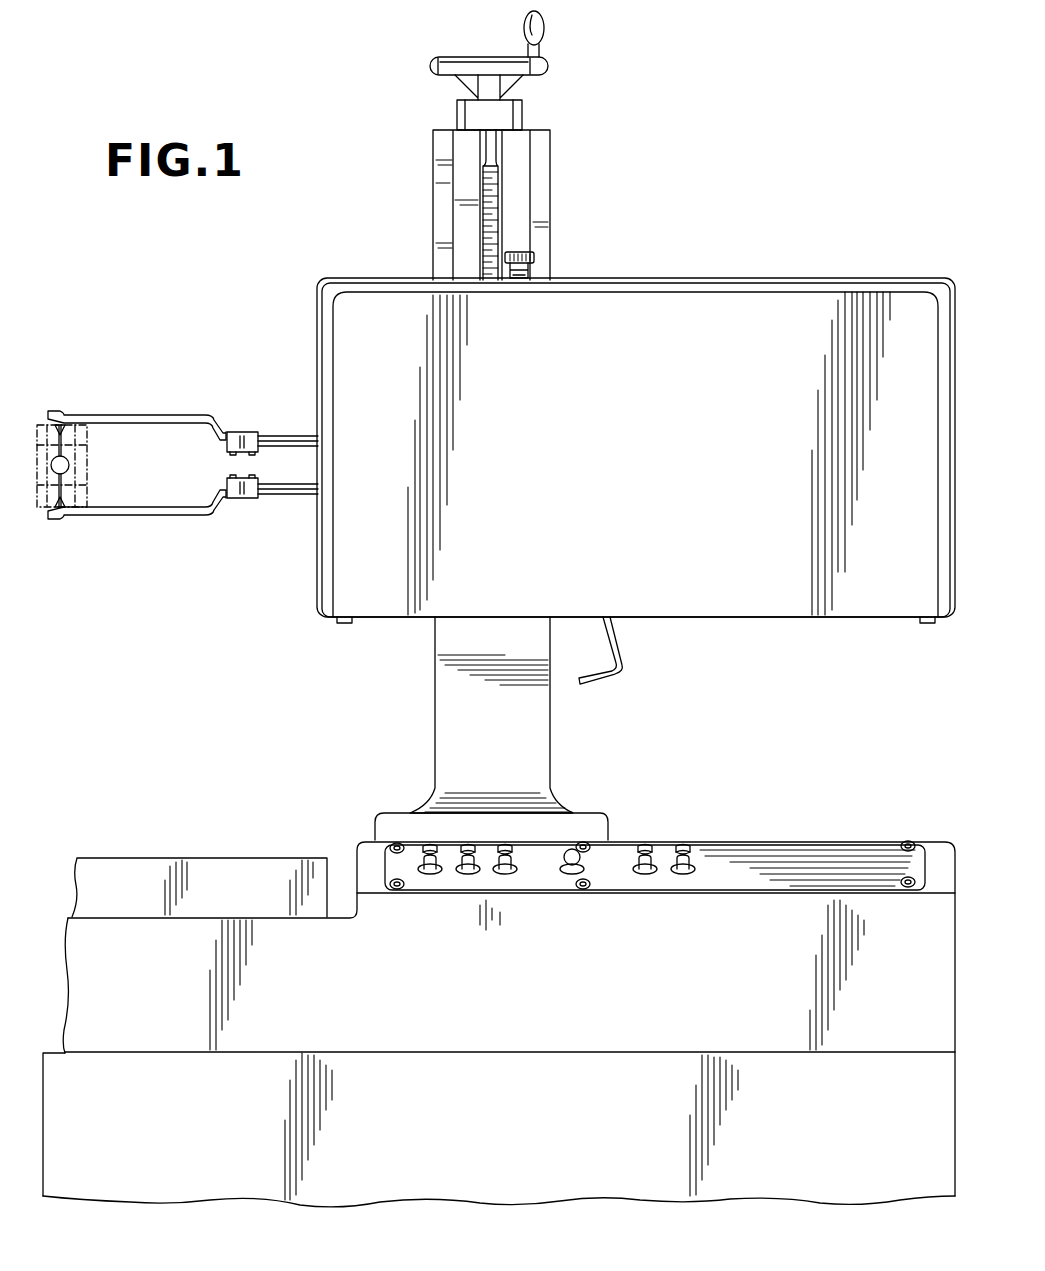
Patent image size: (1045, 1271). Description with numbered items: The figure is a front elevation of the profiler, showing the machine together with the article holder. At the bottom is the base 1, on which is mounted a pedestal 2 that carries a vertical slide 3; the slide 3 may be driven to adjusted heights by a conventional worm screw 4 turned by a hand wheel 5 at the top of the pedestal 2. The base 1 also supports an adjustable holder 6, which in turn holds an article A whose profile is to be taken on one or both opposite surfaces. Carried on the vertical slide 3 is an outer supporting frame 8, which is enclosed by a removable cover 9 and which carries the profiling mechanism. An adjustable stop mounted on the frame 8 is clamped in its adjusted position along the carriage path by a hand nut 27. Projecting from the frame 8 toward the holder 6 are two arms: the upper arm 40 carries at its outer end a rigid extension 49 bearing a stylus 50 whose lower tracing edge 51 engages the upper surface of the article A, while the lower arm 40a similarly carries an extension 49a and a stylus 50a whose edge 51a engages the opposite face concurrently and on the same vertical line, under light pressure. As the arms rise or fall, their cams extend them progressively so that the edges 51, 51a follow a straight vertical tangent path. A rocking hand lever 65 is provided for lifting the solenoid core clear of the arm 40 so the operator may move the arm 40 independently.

The base 1 is at (612, 1028).
The pedestal 2 is at (442, 174).
The vertical slide 3 is at (462, 228).
The worm screw 4 is at (493, 207).
The hand wheel 5 is at (548, 70).
The adjustable holder 6 is at (95, 446).
The outer supporting frame 8 is at (750, 278).
The removable cover 9 is at (630, 447).
The hand nut 27 is at (534, 256).
The arm 40 is at (296, 433).
The lower arm 40a is at (302, 492).
The rigid extension 49 is at (128, 415).
The rigid extension 49a is at (137, 515).
The stylus 50 is at (63, 442).
The stylus 50a is at (67, 497).
The tracing edge 51 is at (57, 455).
The tracing edge 51a is at (57, 475).
The rocking hand lever 65 is at (624, 670).
The article A is at (75, 466).